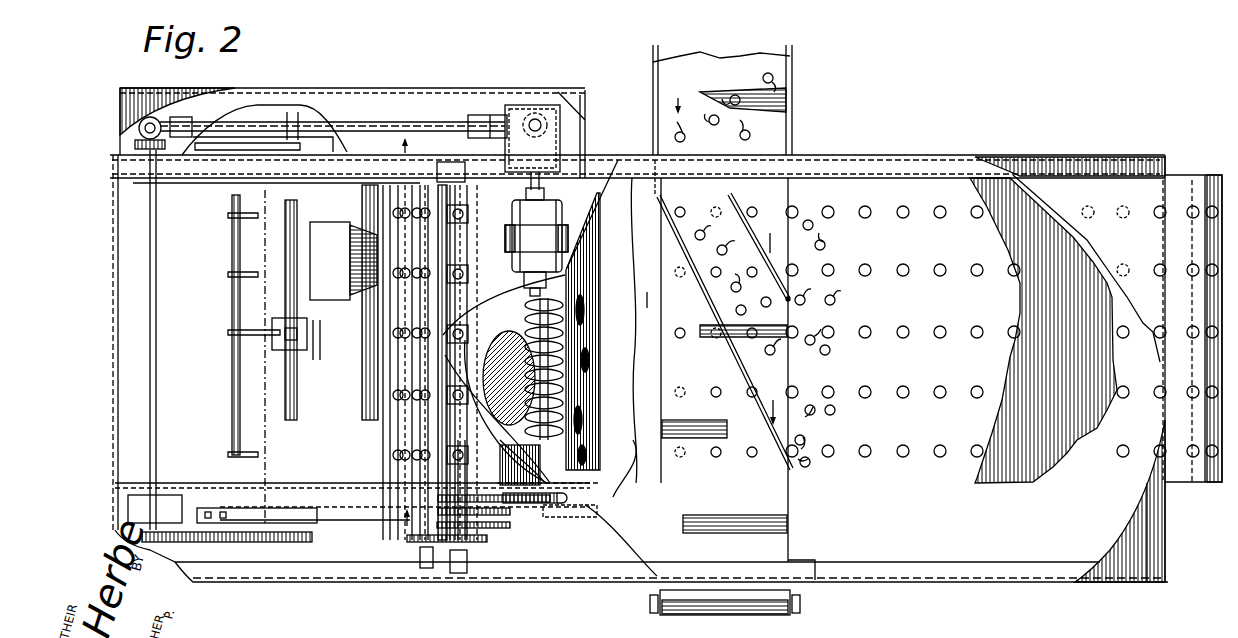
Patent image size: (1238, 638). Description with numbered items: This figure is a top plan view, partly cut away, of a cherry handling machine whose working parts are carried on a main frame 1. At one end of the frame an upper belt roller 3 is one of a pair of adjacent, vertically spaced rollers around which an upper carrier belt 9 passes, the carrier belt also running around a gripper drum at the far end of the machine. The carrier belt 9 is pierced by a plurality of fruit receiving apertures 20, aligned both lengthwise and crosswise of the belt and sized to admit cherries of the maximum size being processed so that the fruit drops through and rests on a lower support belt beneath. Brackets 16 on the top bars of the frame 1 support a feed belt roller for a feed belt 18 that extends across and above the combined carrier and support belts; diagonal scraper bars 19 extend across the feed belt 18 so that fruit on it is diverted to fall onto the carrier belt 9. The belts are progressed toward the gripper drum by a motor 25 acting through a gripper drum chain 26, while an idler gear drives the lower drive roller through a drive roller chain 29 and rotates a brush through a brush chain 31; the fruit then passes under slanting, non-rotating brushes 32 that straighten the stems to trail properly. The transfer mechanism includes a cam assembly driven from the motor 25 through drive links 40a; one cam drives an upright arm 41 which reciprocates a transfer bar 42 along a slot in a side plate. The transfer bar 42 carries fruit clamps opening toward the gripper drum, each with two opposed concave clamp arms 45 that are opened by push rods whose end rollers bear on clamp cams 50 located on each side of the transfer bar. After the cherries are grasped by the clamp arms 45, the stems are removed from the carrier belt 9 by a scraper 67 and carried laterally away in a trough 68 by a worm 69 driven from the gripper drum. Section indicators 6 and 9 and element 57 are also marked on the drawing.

The main frame 1 is at (348, 570).
The upper belt roller 3 is at (868, 392).
The section line 6 is at (360, 390).
The upper carrier belt 9 is at (377, 415).
The brackets 16 is at (648, 590).
The feed belt 18 is at (788, 197).
The diagonal scraper bars 19 is at (752, 248).
The fruit receiving apertures 20 is at (870, 272).
The motor 25 is at (512, 205).
The gripper drum chain 26 is at (558, 505).
The drive roller chain 29 is at (422, 548).
The brush chain 31 is at (492, 525).
The slanting non-rotating brushes 32 is at (520, 380).
The drive links 40a is at (407, 128).
The upright arm 41 is at (253, 520).
The transfer bar 42 is at (265, 222).
The clamp arms 45 is at (468, 268).
The clamp cams 50 is at (447, 180).
The slide block 57 is at (258, 420).
The scraper 67 is at (632, 455).
The trough 68 is at (548, 343).
The worm 69 is at (600, 285).